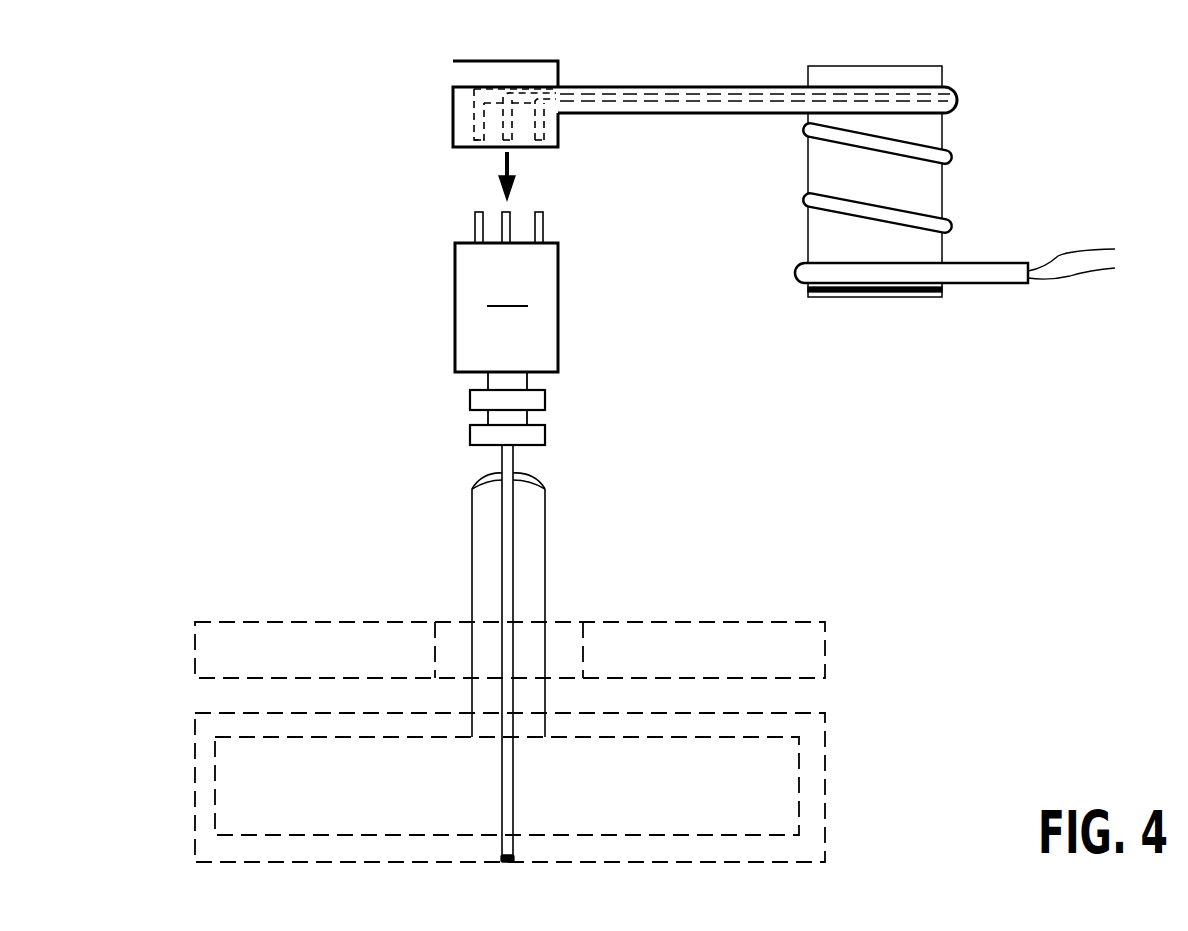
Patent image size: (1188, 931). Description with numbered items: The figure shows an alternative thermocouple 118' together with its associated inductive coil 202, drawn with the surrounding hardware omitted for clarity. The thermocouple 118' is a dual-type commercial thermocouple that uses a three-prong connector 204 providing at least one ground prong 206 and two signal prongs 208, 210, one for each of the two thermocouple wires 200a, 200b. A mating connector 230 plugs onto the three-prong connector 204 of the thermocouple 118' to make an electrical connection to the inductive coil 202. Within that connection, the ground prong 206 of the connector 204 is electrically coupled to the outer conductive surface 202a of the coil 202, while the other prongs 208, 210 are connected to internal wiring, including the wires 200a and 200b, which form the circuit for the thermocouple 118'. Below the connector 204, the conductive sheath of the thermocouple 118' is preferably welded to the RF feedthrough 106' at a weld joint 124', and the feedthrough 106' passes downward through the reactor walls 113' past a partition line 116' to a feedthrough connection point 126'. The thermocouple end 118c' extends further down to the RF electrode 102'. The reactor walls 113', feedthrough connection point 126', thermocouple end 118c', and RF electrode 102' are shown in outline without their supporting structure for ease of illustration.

The mating connector 230 is at (497, 61).
The inductive coil 202 is at (864, 157).
The outer conductive surface 202a is at (958, 158).
The thermocouple wire 200a is at (1082, 250).
The thermocouple wire 200b is at (1090, 270).
The three-prong connector 204 is at (506, 307).
The ground prong 206 is at (470, 224).
The signal prong 208 is at (500, 220).
The signal prong 210 is at (545, 222).
The thermocouple 118' is at (579, 641).
The weld joint 124' is at (561, 474).
The RF feedthrough 106' is at (561, 598).
The reactor walls 113' is at (510, 626).
The partition 116' is at (618, 650).
The feedthrough connection point 126' is at (555, 678).
The RF electrode 102' is at (555, 787).
The thermocouple end 118c' is at (554, 883).